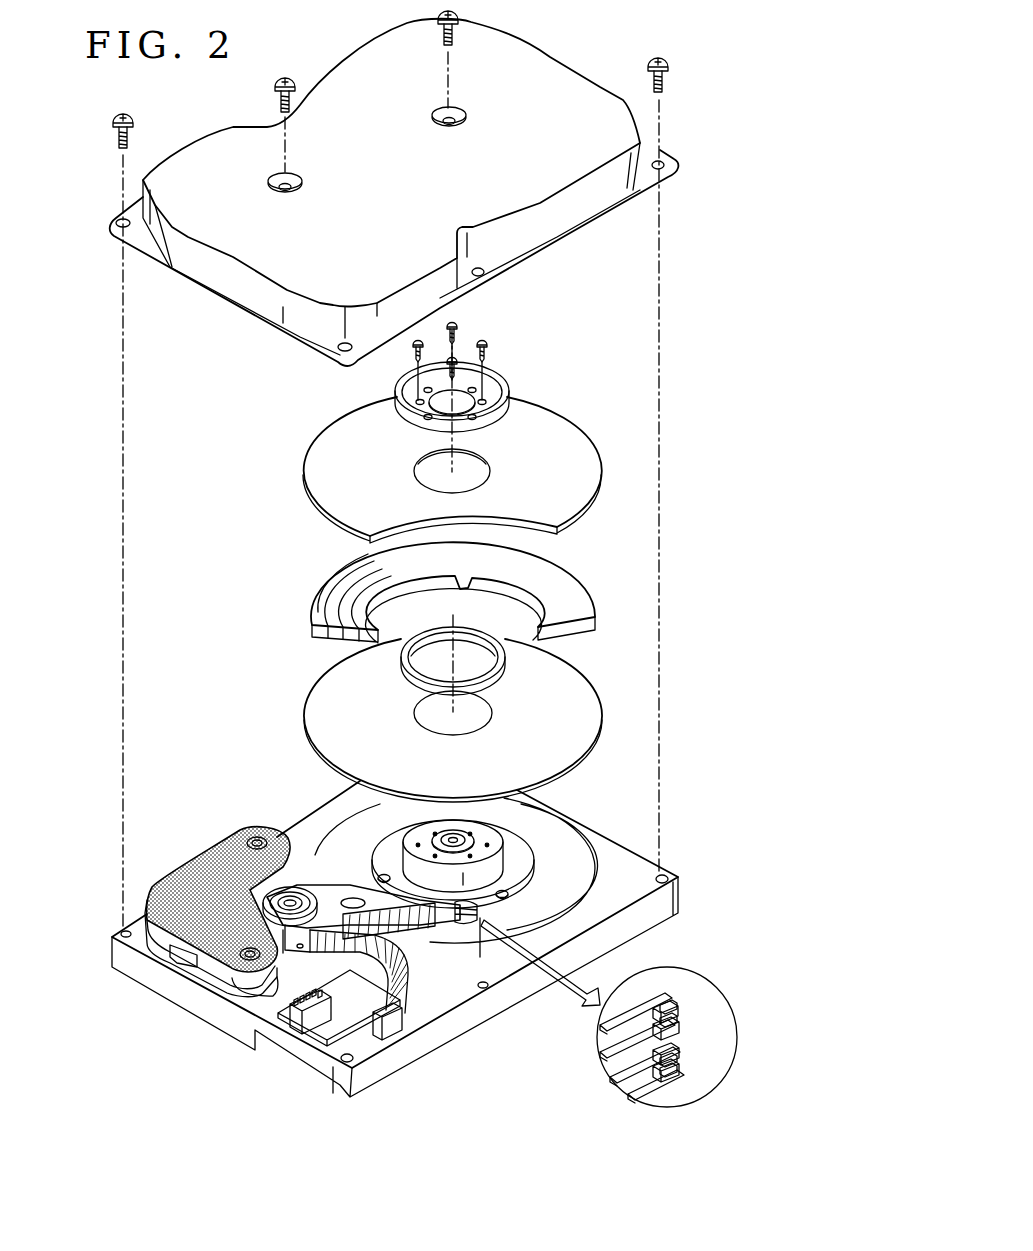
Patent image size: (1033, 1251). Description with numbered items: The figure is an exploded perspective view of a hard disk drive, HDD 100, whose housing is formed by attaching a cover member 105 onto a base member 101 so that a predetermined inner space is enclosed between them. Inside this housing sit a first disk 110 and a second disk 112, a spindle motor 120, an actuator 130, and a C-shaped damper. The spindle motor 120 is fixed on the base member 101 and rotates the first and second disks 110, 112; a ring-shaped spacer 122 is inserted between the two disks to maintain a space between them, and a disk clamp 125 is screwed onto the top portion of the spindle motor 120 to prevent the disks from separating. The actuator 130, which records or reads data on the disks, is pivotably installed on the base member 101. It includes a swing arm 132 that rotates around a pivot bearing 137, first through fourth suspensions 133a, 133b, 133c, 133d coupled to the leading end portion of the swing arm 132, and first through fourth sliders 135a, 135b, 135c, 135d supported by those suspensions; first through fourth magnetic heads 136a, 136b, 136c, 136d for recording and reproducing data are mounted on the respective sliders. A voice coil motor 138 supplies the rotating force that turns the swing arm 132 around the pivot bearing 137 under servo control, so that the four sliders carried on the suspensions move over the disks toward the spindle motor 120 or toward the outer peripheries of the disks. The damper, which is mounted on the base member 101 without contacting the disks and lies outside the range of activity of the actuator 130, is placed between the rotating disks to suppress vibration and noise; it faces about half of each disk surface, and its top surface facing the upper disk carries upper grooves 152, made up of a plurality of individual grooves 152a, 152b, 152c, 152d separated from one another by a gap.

The HDD 100 is at (700, 74).
The base member 101 is at (622, 852).
The cover member 105 is at (218, 143).
The first disk 110 is at (583, 738).
The second disk 112 is at (573, 428).
The spindle motor 120 is at (410, 840).
The ring-shaped spacer 122 is at (503, 668).
The disk clamp 125 is at (490, 378).
The actuator 130 is at (303, 878).
The swing arm 132 is at (393, 935).
The first suspension 133a is at (638, 1093).
The second suspension 133b is at (614, 1080).
The third suspension 133c is at (612, 1062).
The fourth suspension 133d is at (612, 1039).
The first slider 135a is at (683, 1078).
The second slider 135b is at (681, 1050).
The third slider 135c is at (681, 1028).
The fourth slider 135d is at (677, 1010).
The first magnetic head 136a is at (683, 1068).
The second magnetic head 136b is at (681, 1060).
The third magnetic head 136c is at (680, 1017).
The fourth magnetic head 136d is at (673, 1003).
The pivot bearing 137 is at (253, 855).
The voice coil motor 138 is at (163, 947).
The upper grooves 152 is at (252, 518).
The groove 152a is at (375, 572).
The groove 152b is at (370, 583).
The groove 152c is at (350, 610).
The groove 152d is at (327, 615).